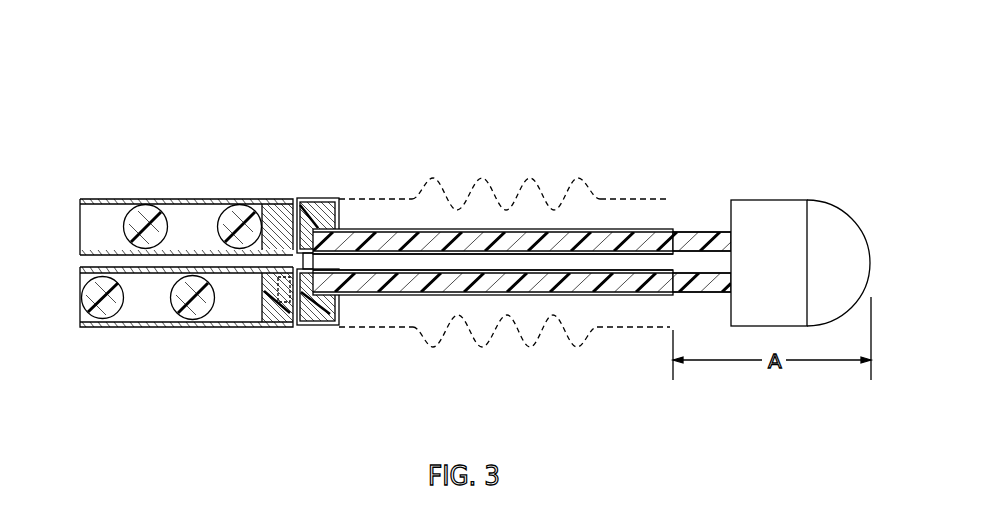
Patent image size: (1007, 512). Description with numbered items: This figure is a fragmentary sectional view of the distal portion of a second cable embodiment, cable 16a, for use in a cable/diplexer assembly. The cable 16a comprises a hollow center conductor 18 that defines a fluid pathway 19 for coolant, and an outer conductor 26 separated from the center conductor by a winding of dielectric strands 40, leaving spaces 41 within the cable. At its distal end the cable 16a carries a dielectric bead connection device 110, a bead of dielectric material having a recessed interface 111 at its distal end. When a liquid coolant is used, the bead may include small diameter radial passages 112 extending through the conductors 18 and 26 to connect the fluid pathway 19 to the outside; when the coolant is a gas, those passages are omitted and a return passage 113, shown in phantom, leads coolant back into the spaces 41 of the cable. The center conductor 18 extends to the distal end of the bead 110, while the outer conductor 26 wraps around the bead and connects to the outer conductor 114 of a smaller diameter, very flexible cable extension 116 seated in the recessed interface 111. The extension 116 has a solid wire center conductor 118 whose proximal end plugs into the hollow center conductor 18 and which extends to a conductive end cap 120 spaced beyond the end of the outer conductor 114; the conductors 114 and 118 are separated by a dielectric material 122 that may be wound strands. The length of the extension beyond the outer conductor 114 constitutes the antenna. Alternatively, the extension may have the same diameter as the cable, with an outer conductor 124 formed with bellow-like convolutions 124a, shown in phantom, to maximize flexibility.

The cable 16a is at (197, 135).
The center conductor 18 is at (103, 250).
The fluid pathway 19 is at (92, 262).
The outer conductor 26 is at (115, 322).
The dielectric strand 40 is at (217, 215).
The spaces 41 is at (147, 308).
The dielectric bead connection device 110 is at (306, 216).
The recessed interface 111 is at (301, 292).
The radial passages 112 is at (296, 300).
The return passage 113 is at (260, 308).
The outer conductor 114 is at (383, 296).
The cable extension 116 is at (527, 210).
The center conductor 118 is at (423, 263).
The conductive end cap 120 is at (797, 213).
The dielectric material 122 is at (650, 284).
The outer conductor 124 is at (630, 199).
The bellow-like convolutions 124a is at (563, 333).